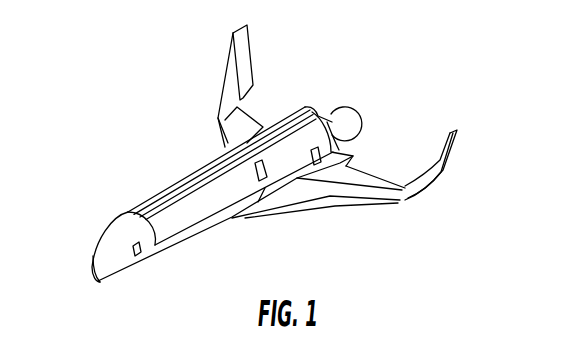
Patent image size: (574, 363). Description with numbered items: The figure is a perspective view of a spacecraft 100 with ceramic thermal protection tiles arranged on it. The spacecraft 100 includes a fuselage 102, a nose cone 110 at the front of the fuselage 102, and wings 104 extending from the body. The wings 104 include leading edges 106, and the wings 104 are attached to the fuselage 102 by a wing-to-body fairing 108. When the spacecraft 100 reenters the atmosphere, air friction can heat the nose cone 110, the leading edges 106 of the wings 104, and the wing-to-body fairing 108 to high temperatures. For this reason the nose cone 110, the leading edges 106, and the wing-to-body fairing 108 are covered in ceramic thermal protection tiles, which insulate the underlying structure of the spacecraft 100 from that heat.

The spacecraft 100 is at (128, 102).
The fuselage 102 is at (190, 215).
The wings 104 is at (245, 125).
The leading edges 106 is at (220, 132).
The wing-to-body fairing 108 is at (233, 216).
The nose cone 110 is at (100, 276).